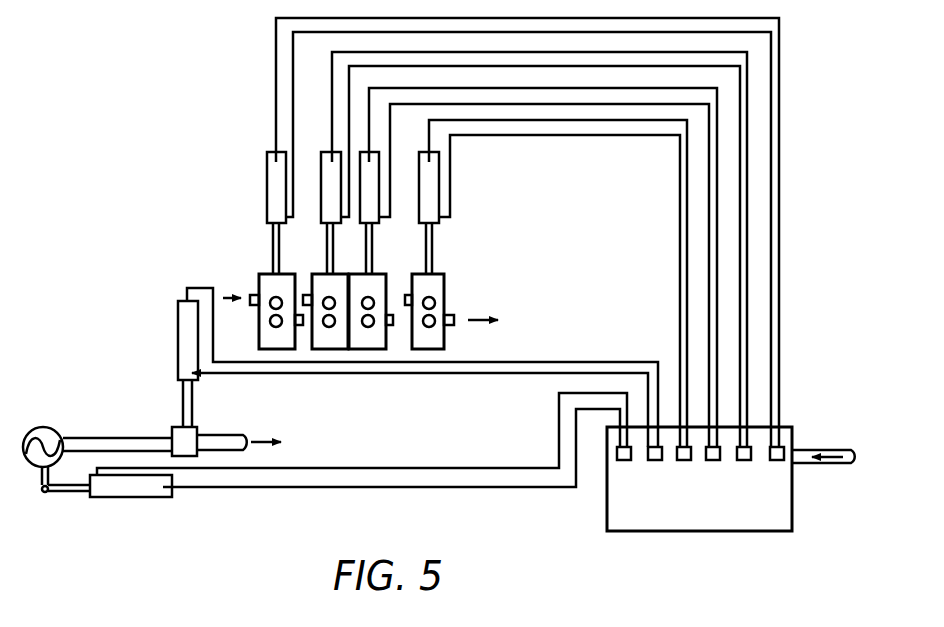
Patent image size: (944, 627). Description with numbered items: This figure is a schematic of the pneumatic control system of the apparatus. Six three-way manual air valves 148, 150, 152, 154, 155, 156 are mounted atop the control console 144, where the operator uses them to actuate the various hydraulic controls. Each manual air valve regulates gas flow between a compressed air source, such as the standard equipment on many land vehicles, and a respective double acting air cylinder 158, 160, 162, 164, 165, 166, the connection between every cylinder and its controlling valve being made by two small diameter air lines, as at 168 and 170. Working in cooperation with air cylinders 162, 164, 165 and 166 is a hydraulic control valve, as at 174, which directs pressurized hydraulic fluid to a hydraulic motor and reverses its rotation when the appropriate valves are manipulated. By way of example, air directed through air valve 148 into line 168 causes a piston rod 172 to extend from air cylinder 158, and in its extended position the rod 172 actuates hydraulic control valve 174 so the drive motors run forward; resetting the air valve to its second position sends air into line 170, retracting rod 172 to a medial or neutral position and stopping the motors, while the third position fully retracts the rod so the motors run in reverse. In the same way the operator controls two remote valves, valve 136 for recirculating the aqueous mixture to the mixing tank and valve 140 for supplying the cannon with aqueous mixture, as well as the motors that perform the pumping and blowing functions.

The valve 136 is at (187, 438).
The valve 140 is at (33, 421).
The console 144 is at (797, 436).
The manual air valve 148 is at (777, 460).
The manual air valve 150 is at (715, 460).
The manual air valve 152 is at (745, 460).
The manual air valve 154 is at (652, 460).
The manual air valve 155 is at (685, 460).
The manual air valve 156 is at (618, 460).
The double acting air cylinder 158 is at (273, 173).
The double acting air cylinder 160 is at (323, 157).
The double acting air cylinder 162 is at (372, 205).
The double acting air cylinder 164 is at (186, 337).
The double acting air cylinder 165 is at (428, 172).
The double acting air cylinder 166 is at (125, 488).
The air line 168 is at (781, 163).
The air line 170 is at (765, 217).
The piston rod 172 is at (271, 243).
The hydraulic control valve 174 is at (268, 283).